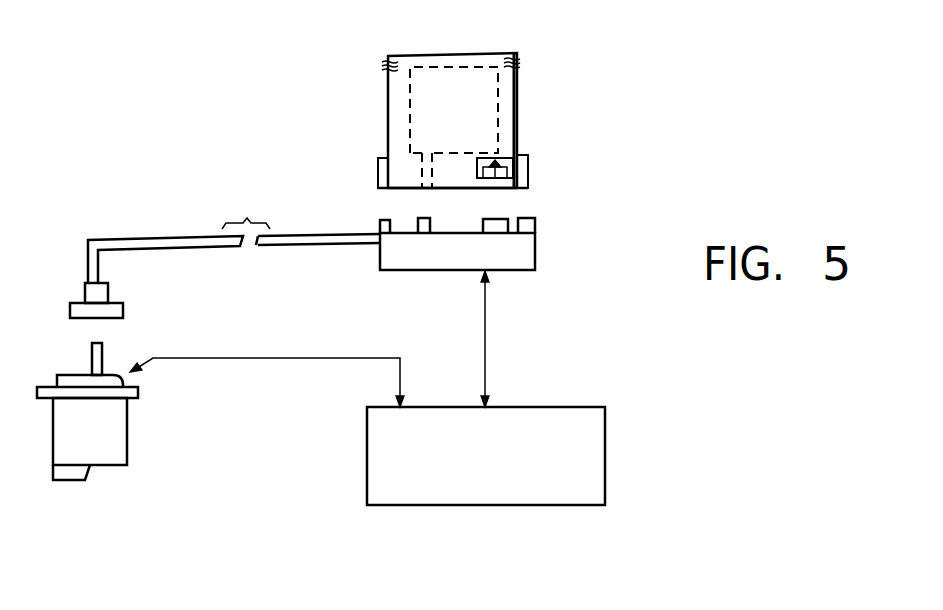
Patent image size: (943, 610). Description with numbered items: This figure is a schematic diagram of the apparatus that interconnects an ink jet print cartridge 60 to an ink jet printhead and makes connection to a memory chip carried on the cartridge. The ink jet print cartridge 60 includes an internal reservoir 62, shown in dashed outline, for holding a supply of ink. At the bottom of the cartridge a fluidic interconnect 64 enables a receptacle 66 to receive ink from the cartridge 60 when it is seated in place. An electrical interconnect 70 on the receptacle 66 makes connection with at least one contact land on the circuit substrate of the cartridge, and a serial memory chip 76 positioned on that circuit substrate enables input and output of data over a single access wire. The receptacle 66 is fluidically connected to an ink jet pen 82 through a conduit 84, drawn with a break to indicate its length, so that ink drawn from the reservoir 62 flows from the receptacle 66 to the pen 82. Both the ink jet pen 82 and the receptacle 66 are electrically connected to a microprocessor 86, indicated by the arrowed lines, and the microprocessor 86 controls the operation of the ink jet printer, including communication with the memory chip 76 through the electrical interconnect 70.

The ink jet print cartridge 60 is at (455, 54).
The internal reservoir 62 is at (472, 102).
The fluidic interconnect 64 is at (418, 198).
The receptacle 66 is at (535, 238).
The electrical interconnect 70 is at (495, 224).
The serial memory chip 76 is at (503, 158).
The ink jet pen 82 is at (100, 449).
The conduit 84 is at (280, 248).
The microprocessor 86 is at (548, 405).